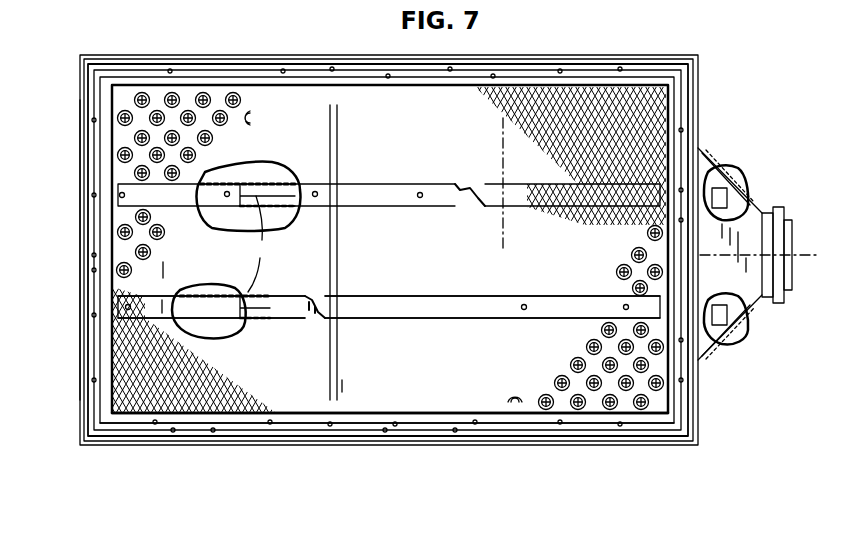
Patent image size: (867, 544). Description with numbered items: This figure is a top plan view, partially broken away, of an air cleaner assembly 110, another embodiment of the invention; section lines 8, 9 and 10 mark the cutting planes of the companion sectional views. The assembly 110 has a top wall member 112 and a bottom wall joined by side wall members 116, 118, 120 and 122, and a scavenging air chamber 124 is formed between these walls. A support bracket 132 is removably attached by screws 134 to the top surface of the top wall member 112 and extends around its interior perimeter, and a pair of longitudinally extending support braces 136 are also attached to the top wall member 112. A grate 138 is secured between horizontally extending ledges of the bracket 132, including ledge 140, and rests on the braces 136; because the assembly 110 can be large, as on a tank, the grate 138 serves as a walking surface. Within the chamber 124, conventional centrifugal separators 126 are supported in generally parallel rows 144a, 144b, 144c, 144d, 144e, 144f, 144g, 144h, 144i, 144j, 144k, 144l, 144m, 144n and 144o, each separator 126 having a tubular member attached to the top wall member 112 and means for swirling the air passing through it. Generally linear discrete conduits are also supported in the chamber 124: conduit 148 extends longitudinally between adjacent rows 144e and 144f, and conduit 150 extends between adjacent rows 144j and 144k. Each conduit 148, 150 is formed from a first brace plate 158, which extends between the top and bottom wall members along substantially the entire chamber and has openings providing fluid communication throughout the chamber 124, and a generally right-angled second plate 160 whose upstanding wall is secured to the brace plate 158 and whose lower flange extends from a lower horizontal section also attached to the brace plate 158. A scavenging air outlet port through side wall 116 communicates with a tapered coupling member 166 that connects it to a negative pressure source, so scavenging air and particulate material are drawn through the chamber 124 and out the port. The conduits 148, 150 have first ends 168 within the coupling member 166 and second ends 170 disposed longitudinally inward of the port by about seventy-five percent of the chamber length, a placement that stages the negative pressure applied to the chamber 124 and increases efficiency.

The section line 8- 8 is at (222, 50).
The section line 9- 9 is at (78, 255).
The air cleaner assembly 10 is at (78, 85).
The air cleaner assembly 110 is at (728, 64).
The top wall member 112 is at (362, 94).
The side wall member 116 is at (700, 424).
The side wall member 118 is at (368, 446).
The side wall member 120 is at (80, 240).
The side wall member 122 is at (318, 62).
The scavenging air chamber 124 is at (266, 288).
The centrifugal separators 126 is at (170, 82).
The support bracket 132 is at (435, 432).
The screws 134 is at (492, 72).
The support braces 136 is at (460, 195).
The grate 138 is at (605, 108).
The ledge 140 is at (322, 416).
The row of centrifugal separators 144a is at (242, 97).
The row of centrifugal separators 144b is at (252, 118).
The row of centrifugal separators 144c is at (213, 138).
The row of centrifugal separators 144d is at (196, 155).
The row of centrifugal separators 144e is at (182, 178).
The row of centrifugal separators 144f is at (152, 218).
The row of centrifugal separators 144g is at (166, 236).
The row of centrifugal separators 144h is at (630, 255).
The row of centrifugal separators 144i is at (614, 272).
The row of centrifugal separators 144j is at (630, 288).
The row of centrifugal separators 144k is at (600, 330).
The row of centrifugal separators 144l is at (585, 347).
The row of centrifugal separators 144m is at (568, 365).
The row of centrifugal separators 144n is at (665, 383).
The row of centrifugal separators 144o is at (643, 412).
The conduit 148 is at (277, 214).
The conduit 150 is at (274, 326).
The brace plate 158 is at (292, 175).
The second plate 160 is at (300, 212).
The tapered coupling member 166 is at (748, 226).
The first ends of conduits 168 is at (732, 195).
The second ends of conduits 170 is at (262, 244).